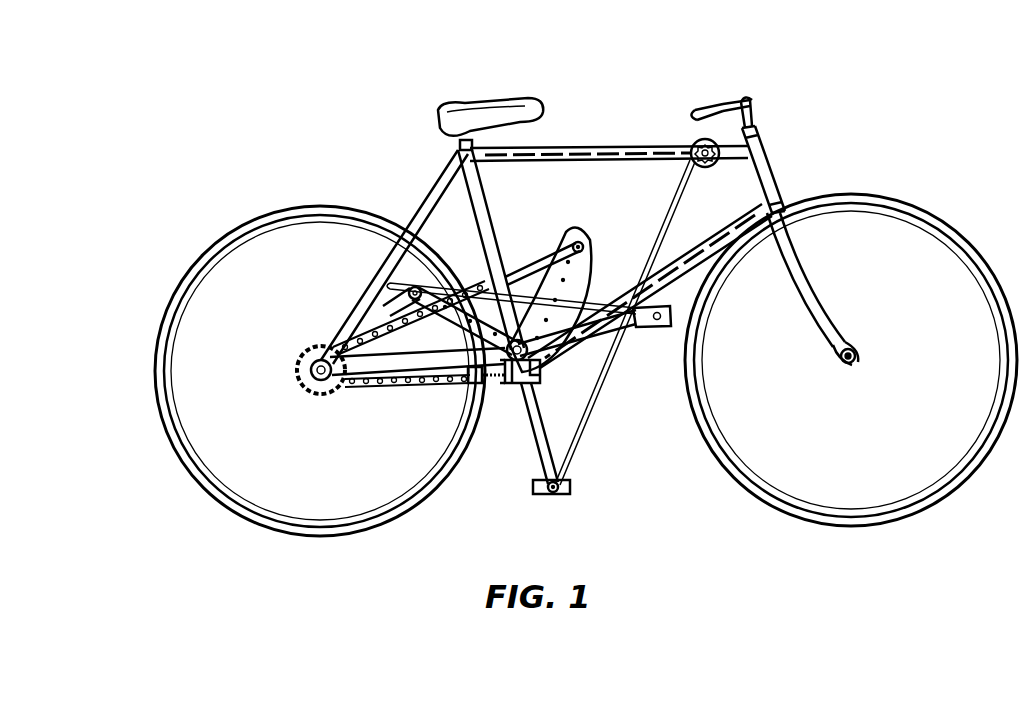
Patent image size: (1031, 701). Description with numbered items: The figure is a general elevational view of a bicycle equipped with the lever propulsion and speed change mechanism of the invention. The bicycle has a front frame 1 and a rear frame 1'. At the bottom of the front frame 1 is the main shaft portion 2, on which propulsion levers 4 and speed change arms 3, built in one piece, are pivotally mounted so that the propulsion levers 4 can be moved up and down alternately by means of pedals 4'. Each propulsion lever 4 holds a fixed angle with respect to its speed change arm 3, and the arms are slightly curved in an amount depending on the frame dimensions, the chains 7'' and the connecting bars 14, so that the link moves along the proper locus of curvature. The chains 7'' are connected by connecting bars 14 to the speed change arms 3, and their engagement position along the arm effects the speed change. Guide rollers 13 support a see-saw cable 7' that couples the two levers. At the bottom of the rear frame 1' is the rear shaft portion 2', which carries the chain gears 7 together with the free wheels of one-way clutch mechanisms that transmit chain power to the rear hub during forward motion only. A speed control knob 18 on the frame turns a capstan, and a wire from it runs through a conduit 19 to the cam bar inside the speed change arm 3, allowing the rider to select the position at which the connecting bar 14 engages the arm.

The front frame 1 is at (650, 272).
The rear frame 1' is at (394, 257).
The main shaft portion 2 is at (509, 410).
The rear shaft portion 2' is at (320, 371).
The speed change arm 3 is at (570, 230).
The propulsion lever 4 is at (557, 433).
The pedal 4' is at (569, 495).
The chain gear 7 is at (396, 410).
The see-saw cable 7' is at (486, 407).
The chain 7'' is at (411, 363).
The guide roller 13 is at (540, 378).
The connecting bar 14 is at (530, 262).
The speed control knob 18 is at (692, 144).
The conduit 19 is at (666, 216).